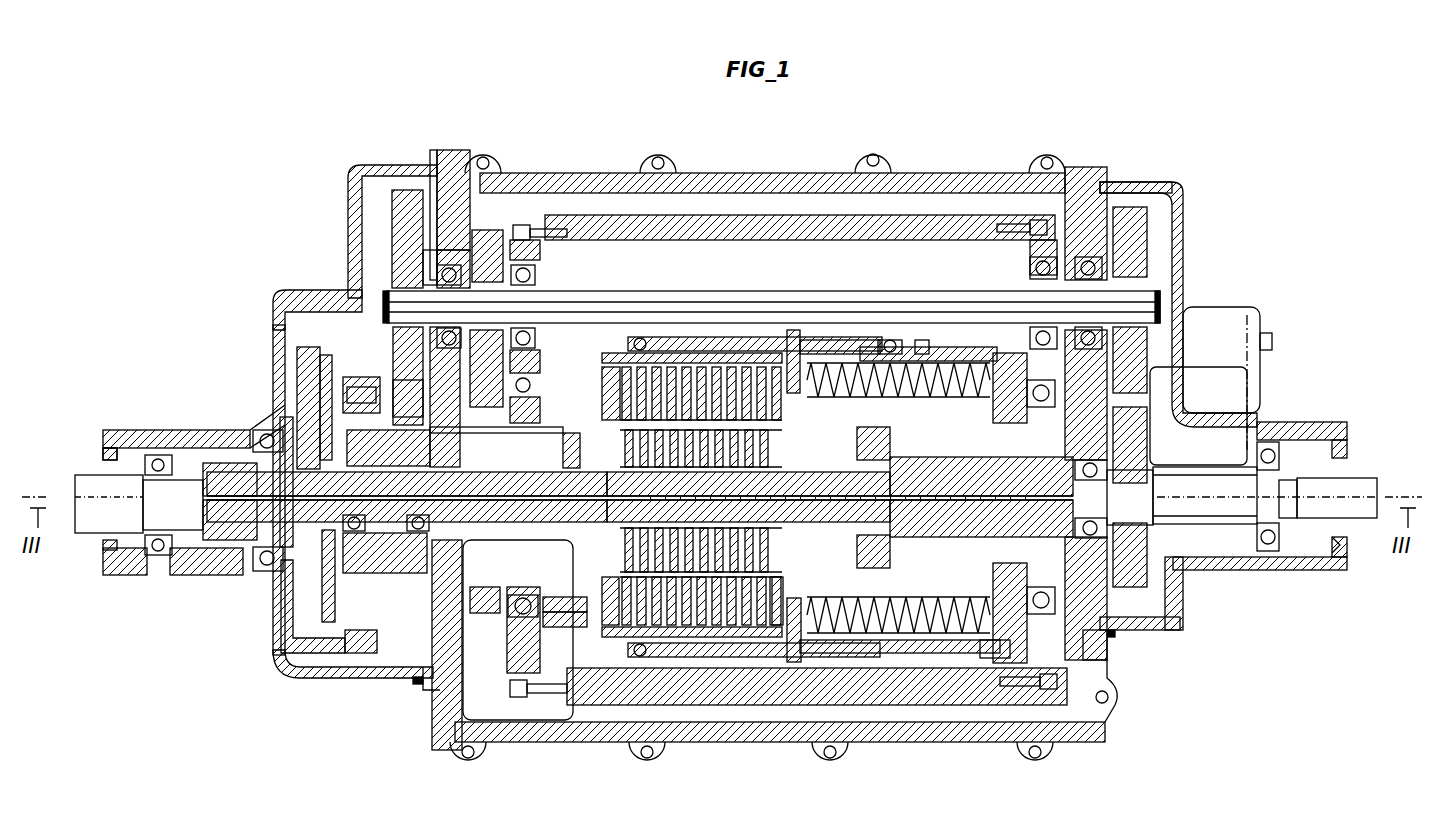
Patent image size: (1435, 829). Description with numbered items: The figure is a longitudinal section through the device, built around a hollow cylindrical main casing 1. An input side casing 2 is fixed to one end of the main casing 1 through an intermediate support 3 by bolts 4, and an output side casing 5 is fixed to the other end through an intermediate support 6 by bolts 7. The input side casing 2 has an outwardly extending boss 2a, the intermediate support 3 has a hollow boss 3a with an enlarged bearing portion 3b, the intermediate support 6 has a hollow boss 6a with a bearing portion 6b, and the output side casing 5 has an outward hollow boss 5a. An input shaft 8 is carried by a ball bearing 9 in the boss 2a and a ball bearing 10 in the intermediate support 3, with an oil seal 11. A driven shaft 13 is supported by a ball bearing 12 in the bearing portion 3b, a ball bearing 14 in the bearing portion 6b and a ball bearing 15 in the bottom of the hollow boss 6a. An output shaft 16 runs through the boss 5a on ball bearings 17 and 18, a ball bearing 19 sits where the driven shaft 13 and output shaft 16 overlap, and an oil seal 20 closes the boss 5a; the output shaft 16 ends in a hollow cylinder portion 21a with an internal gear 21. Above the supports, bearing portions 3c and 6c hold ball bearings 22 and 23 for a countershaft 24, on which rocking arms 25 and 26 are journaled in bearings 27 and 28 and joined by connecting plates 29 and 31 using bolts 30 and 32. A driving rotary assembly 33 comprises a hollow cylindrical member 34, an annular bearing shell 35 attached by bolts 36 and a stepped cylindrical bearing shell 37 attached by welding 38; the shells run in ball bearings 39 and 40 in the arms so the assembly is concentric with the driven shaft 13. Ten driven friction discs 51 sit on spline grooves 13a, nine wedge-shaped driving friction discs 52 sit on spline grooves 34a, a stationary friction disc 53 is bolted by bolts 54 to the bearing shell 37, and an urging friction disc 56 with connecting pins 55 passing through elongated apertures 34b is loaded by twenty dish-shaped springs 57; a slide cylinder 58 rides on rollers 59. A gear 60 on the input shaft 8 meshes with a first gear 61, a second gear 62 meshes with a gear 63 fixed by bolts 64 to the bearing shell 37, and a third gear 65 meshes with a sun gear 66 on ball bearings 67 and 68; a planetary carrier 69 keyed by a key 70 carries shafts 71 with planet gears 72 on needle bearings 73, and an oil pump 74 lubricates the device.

The main casing 1 is at (700, 173).
The input side casing 2 is at (1183, 247).
The boss 2a is at (1283, 430).
The intermediate support 3 is at (1088, 175).
The hollow boss 3a is at (925, 537).
The bearing portion 3b is at (878, 433).
The bearing portion 3c is at (1125, 210).
The bolts 4 is at (1118, 635).
The output side casing 5 is at (272, 328).
The hollow boss 5a is at (173, 430).
The intermediate support 6 is at (445, 153).
The hollow boss 6a is at (503, 460).
The bearing portion 6b is at (575, 430).
The bearing portion 6c is at (430, 205).
The bolts 7 is at (413, 684).
The input shaft 8 is at (1315, 520).
The ball bearing 9 is at (1266, 552).
The ball bearing 10 is at (1075, 452).
The oil seal 11 is at (1334, 546).
The ball bearing 12 is at (832, 470).
The driven shaft 13 is at (830, 523).
The spline grooves 13a is at (790, 547).
The ball bearing 14 is at (563, 447).
The ball bearing 15 is at (478, 580).
The output shaft 16 is at (95, 535).
The ball bearing 17 is at (262, 573).
The ball bearing 18 is at (157, 557).
The ball bearing 19 is at (222, 542).
The oil seal 20 is at (103, 452).
The internal gear 21 is at (360, 653).
The hollow cylinder portion 21a is at (300, 652).
The ball bearing 22 is at (1135, 215).
The ball bearing 23 is at (425, 265).
The countershaft 24 is at (595, 292).
The rocking arm 25 is at (1038, 240).
The rocking arm 26 is at (490, 230).
The bearing 27 is at (1030, 265).
The bearing 28 is at (536, 273).
The connecting plate 29 is at (880, 706).
The bolts 30 is at (510, 688).
The connecting plate 31 is at (760, 215).
The bolts 32 is at (515, 228).
The driving rotary assembly 33 is at (927, 330).
The hollow cylindrical member 34 is at (955, 347).
The spline grooves 34a is at (728, 655).
The elongated apertures 34b is at (840, 340).
The annular bearing shell 35 is at (995, 405).
The bolts 36 is at (980, 648).
The stepped cylindrical bearing shell 37 is at (567, 612).
The welding 38 is at (615, 650).
The ball bearing 39 is at (1035, 590).
The ball bearing 40 is at (527, 595).
The driven friction discs 51 is at (782, 400).
The driving friction discs 52 is at (776, 640).
The stationary friction disc 53 is at (602, 590).
The bolts 54 is at (572, 628).
The connecting pins 55 is at (793, 330).
The urging friction disc 56 is at (796, 573).
The dish-shaped springs 57 is at (920, 635).
The slide cylinder 58 is at (660, 337).
The rollers 59 is at (890, 340).
The gear 60 is at (1180, 618).
The first gear 61 is at (1185, 203).
The second gear 62 is at (462, 172).
The gear 63 is at (507, 640).
The bolts 64 is at (486, 613).
The third gear 65 is at (393, 262).
The sun gear 66 is at (410, 532).
The ball bearing 67 is at (402, 575).
The ball bearing 68 is at (354, 532).
The planetary carrier 69 is at (322, 600).
The key 70 is at (262, 430).
The shafts 71 is at (326, 365).
The planet gears 72 is at (360, 377).
The needle bearings 73 is at (307, 360).
The oil pump 74 is at (1203, 440).